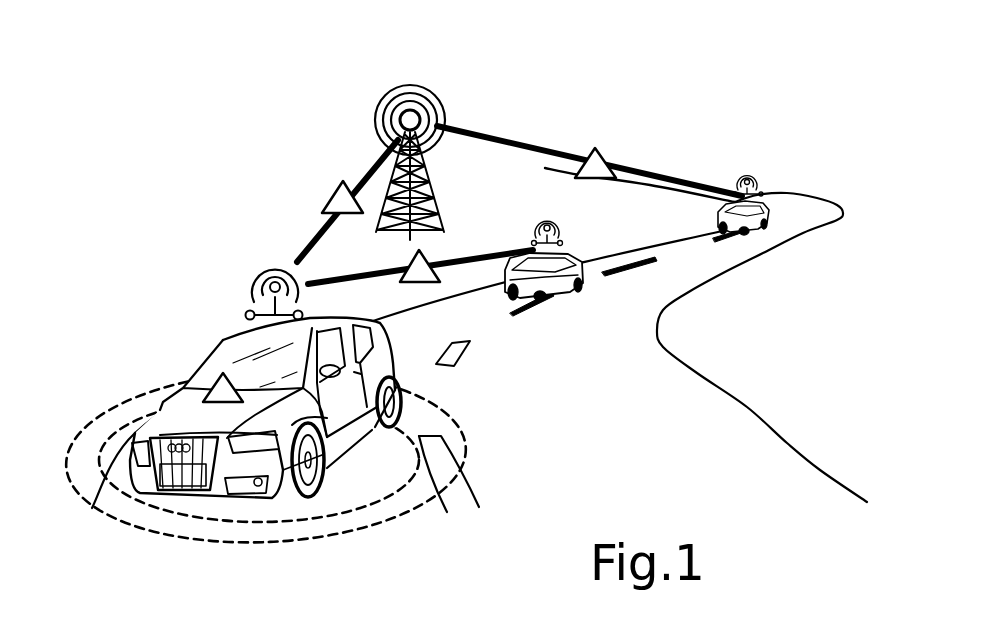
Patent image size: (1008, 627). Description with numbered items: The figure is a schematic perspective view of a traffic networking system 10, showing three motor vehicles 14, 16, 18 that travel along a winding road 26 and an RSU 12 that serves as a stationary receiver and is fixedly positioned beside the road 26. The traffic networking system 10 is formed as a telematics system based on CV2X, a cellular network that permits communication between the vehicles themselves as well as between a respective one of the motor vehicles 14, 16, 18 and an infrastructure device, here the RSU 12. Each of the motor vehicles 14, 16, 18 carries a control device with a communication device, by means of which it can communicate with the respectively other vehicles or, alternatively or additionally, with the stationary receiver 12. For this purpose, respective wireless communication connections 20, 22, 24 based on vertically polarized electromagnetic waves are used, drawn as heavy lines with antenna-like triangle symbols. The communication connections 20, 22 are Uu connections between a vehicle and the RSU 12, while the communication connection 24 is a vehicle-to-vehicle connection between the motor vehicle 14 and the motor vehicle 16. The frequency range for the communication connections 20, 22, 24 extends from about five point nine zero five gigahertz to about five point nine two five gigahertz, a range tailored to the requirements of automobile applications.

The traffic networking system 10 is at (258, 193).
The RSU 12 is at (447, 96).
The motor vehicle 14 is at (218, 342).
The motor vehicle 16 is at (573, 250).
The motor vehicle 18 is at (767, 193).
The wireless communication connection 20 is at (545, 148).
The wireless communication connection 22 is at (318, 222).
The wireless communication connection 24 is at (477, 257).
The road 26 is at (725, 440).